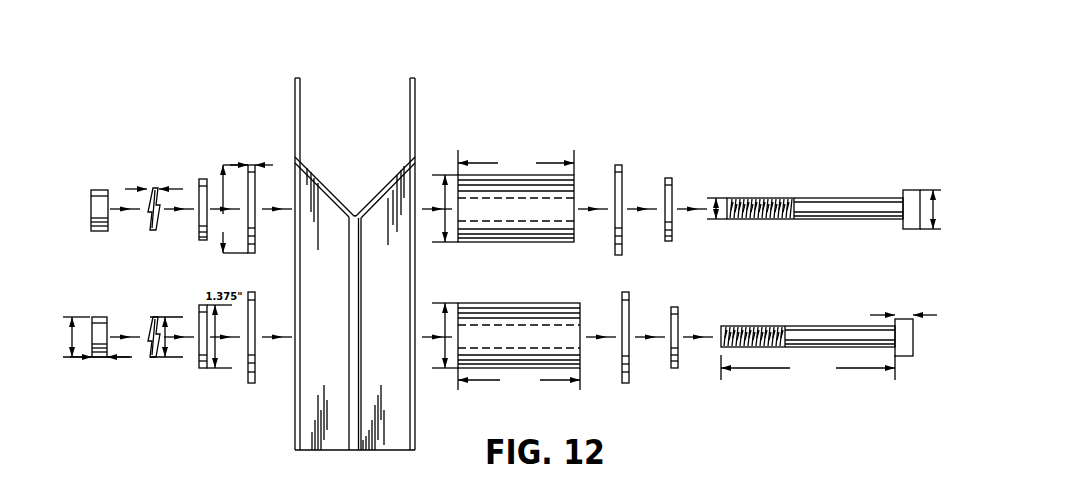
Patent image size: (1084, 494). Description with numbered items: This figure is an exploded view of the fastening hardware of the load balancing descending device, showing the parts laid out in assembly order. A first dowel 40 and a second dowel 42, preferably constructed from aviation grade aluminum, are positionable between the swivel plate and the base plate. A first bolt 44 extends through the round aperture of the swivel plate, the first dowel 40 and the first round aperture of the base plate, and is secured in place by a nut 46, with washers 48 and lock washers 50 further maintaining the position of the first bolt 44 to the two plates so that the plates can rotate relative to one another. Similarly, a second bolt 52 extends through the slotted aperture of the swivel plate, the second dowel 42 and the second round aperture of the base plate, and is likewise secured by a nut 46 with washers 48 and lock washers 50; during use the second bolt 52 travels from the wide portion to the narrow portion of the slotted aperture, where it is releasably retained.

The first dowel 40 is at (526, 157).
The second dowel 42 is at (517, 303).
The first bolt 44 is at (833, 198).
The nut 46 is at (100, 190).
The washer 48 is at (252, 165).
The lock washer 50 is at (157, 225).
The second bolt 52 is at (825, 326).